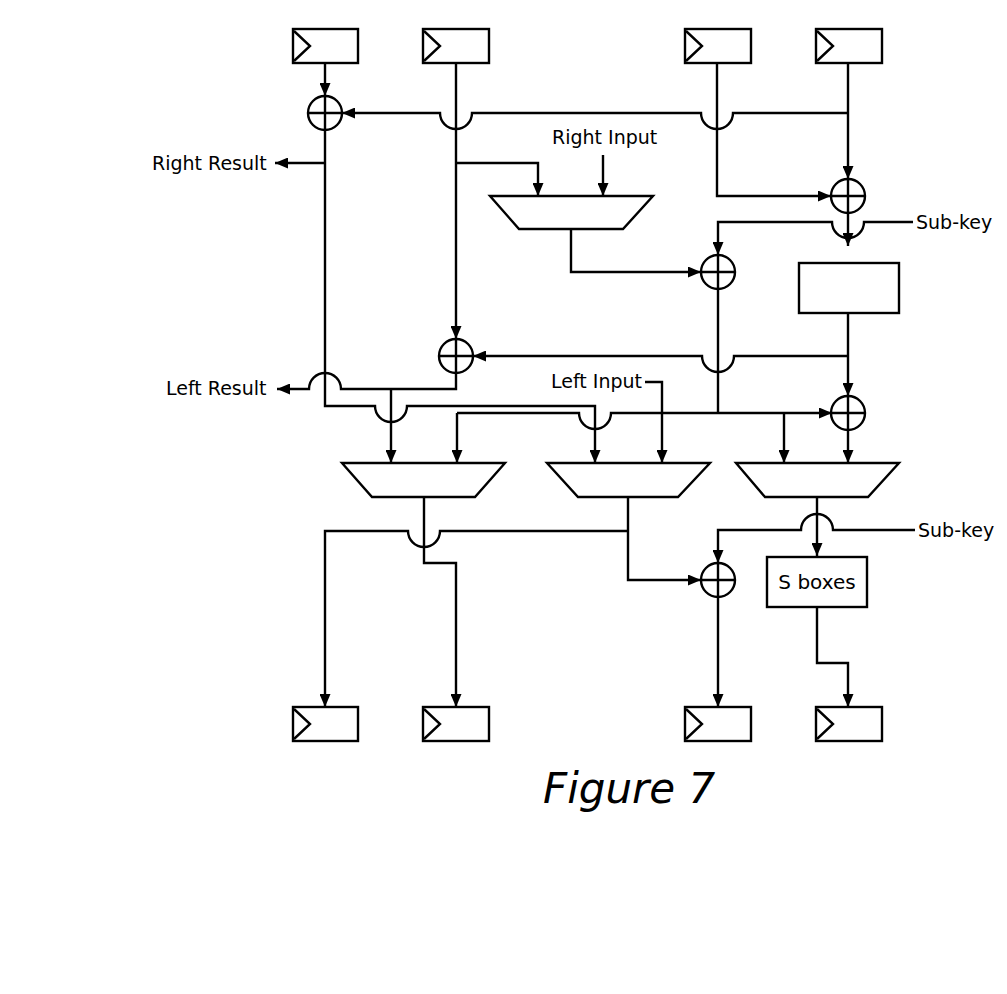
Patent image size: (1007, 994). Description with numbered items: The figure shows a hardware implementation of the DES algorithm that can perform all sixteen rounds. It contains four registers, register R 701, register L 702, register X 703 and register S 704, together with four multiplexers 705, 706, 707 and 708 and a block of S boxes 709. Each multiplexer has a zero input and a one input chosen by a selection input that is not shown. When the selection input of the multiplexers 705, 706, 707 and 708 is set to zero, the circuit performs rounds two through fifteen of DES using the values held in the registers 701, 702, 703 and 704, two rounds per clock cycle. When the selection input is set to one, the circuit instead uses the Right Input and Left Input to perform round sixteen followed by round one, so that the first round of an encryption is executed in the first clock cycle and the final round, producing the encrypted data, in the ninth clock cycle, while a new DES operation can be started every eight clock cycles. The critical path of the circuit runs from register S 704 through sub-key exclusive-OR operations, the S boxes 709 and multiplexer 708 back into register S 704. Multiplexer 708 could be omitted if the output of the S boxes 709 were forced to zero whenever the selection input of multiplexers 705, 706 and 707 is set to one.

The register R 701 is at (338, 29).
The register L 702 is at (470, 29).
The register X 703 is at (730, 29).
The register S 704 is at (860, 29).
The multiplexer 705 is at (642, 196).
The multiplexer 706 is at (487, 463).
The multiplexer 707 is at (698, 463).
The multiplexer 708 is at (879, 463).
The S boxes 709 is at (877, 263).